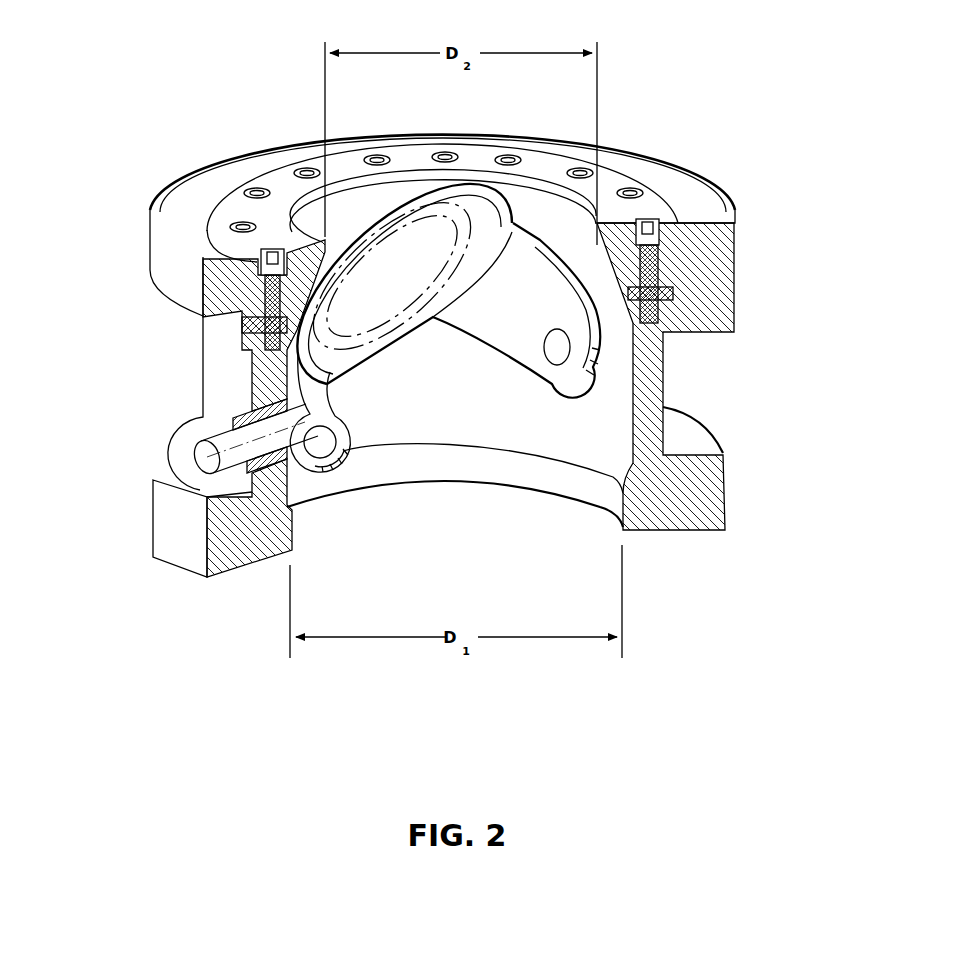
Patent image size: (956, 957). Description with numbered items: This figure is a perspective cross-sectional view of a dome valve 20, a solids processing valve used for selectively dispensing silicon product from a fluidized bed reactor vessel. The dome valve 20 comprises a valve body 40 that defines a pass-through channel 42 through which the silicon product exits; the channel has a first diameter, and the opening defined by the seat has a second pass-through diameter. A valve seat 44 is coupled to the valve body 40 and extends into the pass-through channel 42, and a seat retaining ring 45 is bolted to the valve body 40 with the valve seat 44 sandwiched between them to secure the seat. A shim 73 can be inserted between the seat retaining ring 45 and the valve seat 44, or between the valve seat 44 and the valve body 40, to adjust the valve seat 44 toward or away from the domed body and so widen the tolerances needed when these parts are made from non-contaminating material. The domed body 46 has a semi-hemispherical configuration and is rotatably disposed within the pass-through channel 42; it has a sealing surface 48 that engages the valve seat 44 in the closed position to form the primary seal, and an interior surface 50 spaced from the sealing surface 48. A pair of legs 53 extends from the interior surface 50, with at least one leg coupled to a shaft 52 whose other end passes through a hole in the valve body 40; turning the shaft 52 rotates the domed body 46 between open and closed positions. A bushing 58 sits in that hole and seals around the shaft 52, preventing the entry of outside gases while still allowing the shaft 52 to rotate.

The dome valve 20 is at (457, 384).
The valve body 40 is at (713, 497).
The pass-through channel 42 is at (432, 528).
The valve seat 44 is at (547, 213).
The seat retaining ring 45 is at (253, 289).
The domed body 46 is at (392, 200).
The sealing surface 48 is at (365, 216).
The interior surface 50 is at (364, 278).
The shaft 52 is at (203, 455).
The pair of legs 53 is at (345, 423).
The bushing 58 is at (247, 415).
The shim 73 is at (260, 332).